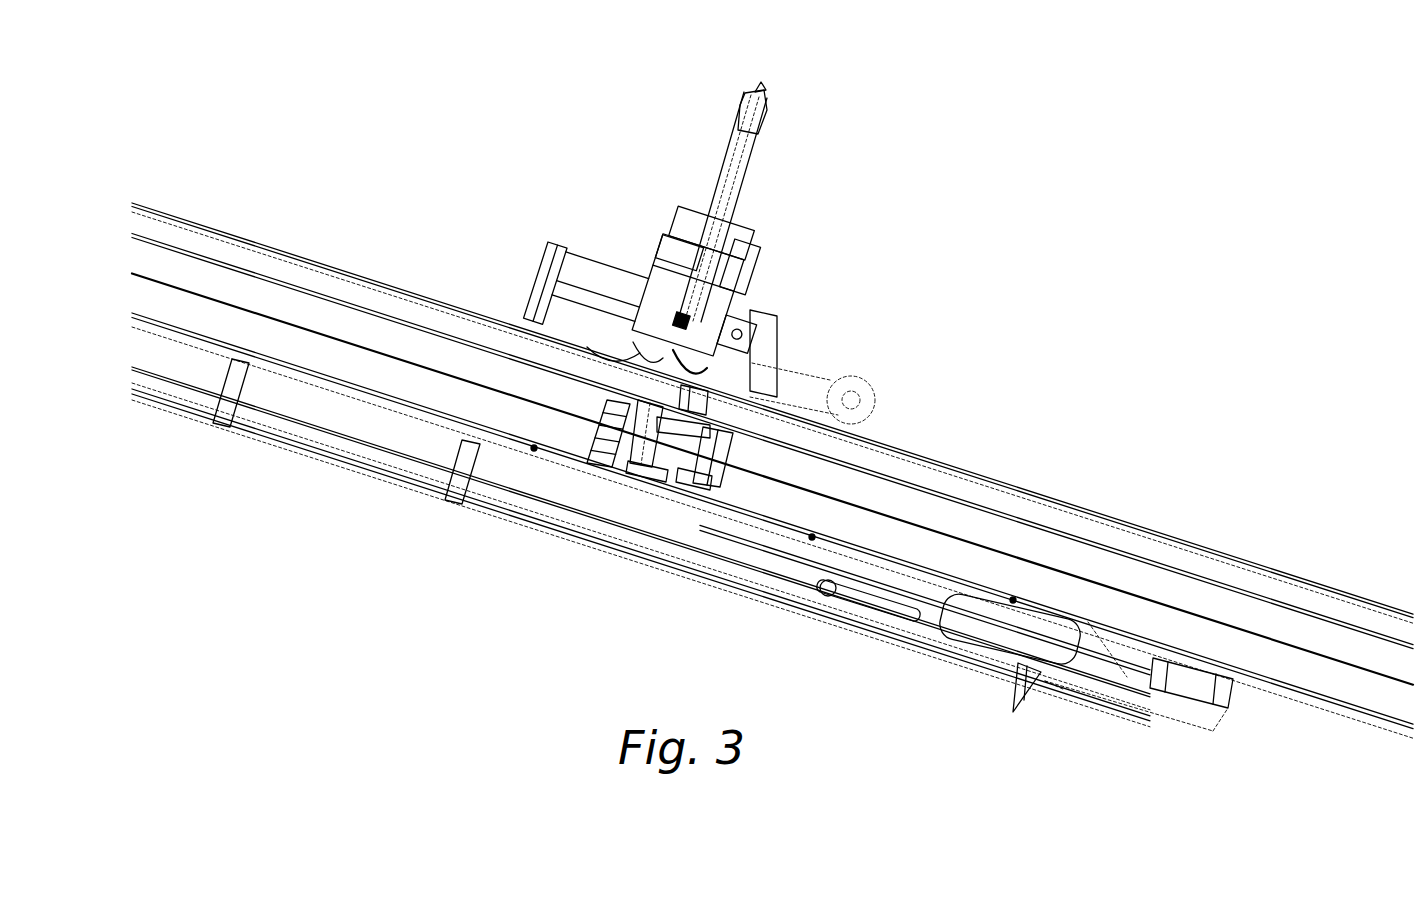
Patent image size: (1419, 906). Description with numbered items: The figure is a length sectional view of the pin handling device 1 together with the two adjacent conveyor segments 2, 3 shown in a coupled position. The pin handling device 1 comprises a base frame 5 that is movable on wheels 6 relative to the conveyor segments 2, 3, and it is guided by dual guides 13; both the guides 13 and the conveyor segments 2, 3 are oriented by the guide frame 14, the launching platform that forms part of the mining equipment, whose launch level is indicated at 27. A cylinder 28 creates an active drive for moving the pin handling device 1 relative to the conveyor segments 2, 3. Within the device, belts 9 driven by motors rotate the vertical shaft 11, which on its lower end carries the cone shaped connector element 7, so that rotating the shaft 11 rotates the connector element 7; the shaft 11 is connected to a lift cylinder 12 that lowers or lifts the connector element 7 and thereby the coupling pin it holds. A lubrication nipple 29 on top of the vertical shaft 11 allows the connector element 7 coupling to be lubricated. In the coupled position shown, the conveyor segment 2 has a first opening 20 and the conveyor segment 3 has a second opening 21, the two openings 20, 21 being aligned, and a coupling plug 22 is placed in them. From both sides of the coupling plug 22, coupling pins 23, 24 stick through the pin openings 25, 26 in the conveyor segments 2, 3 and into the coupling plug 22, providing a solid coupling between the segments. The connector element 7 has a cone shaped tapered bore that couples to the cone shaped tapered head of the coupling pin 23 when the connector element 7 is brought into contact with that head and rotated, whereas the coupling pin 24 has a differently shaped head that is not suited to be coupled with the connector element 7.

The pin handling device 1 is at (547, 128).
The conveyor segment 2 is at (328, 287).
The conveyor segment 3 is at (1018, 527).
The base frame 5 is at (680, 268).
The wheels 6 is at (625, 355).
The connector element 7 is at (705, 320).
The belts 9 is at (680, 222).
The vertical shaft 11 is at (732, 177).
The lift cylinder 12 is at (725, 165).
The dual guides 13 is at (548, 250).
The guide frame 14 is at (330, 417).
The first opening 20 is at (623, 440).
The second opening 21 is at (728, 473).
The coupling plug 22 is at (673, 450).
The coupling pin 23 is at (633, 463).
The coupling pin 24 is at (700, 486).
The pin opening 25 is at (645, 395).
The pin opening 26 is at (715, 425).
The launch level 27 is at (533, 447).
The cylinder 28 is at (800, 385).
The lubrication nipple 29 is at (770, 110).